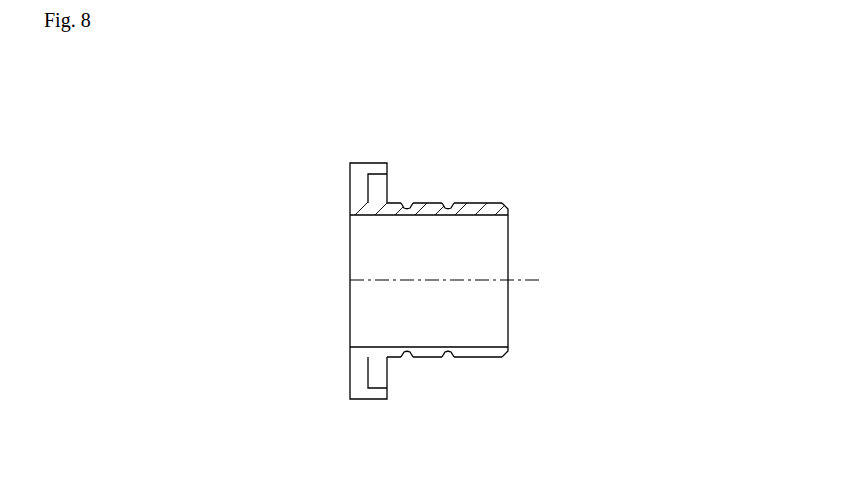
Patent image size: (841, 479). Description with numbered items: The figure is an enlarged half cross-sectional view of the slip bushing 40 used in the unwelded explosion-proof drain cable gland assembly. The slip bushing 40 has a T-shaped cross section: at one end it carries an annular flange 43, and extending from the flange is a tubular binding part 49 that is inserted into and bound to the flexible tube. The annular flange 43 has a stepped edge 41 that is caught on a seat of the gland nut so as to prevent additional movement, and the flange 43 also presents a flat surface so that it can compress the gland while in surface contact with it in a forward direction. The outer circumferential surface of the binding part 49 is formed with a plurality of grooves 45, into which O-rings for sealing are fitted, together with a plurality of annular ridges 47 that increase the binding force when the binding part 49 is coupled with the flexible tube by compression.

The slip bushing 40 is at (322, 148).
The stepped edge 41 is at (383, 393).
The annular flange 43 is at (350, 372).
The grooves 45 is at (405, 203).
The annular ridges 47 is at (468, 205).
The binding part 49 is at (492, 203).